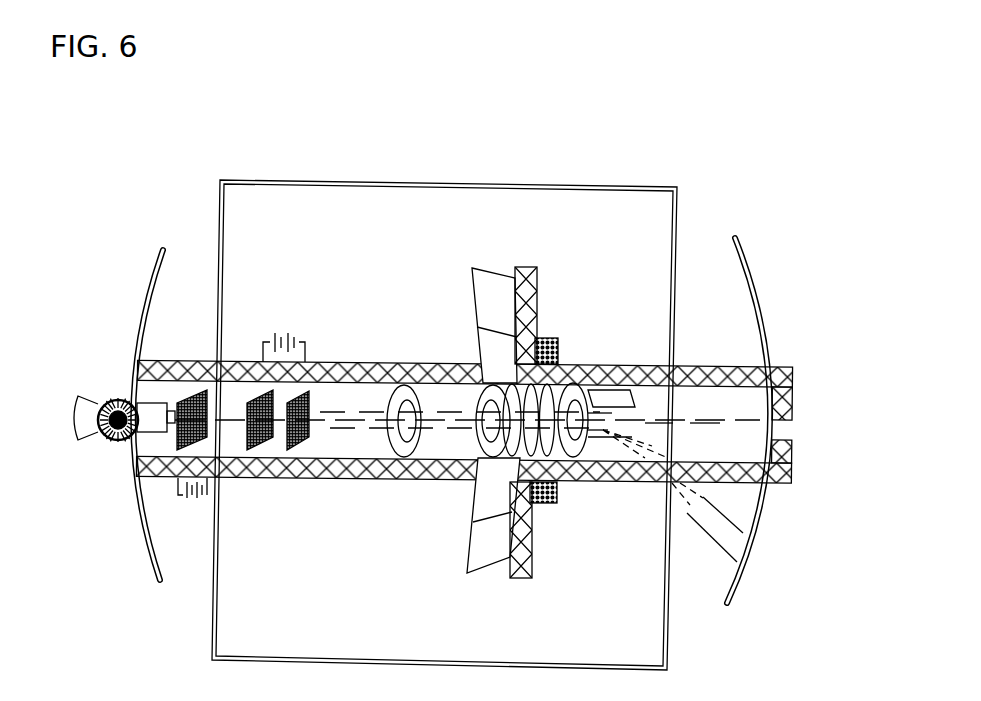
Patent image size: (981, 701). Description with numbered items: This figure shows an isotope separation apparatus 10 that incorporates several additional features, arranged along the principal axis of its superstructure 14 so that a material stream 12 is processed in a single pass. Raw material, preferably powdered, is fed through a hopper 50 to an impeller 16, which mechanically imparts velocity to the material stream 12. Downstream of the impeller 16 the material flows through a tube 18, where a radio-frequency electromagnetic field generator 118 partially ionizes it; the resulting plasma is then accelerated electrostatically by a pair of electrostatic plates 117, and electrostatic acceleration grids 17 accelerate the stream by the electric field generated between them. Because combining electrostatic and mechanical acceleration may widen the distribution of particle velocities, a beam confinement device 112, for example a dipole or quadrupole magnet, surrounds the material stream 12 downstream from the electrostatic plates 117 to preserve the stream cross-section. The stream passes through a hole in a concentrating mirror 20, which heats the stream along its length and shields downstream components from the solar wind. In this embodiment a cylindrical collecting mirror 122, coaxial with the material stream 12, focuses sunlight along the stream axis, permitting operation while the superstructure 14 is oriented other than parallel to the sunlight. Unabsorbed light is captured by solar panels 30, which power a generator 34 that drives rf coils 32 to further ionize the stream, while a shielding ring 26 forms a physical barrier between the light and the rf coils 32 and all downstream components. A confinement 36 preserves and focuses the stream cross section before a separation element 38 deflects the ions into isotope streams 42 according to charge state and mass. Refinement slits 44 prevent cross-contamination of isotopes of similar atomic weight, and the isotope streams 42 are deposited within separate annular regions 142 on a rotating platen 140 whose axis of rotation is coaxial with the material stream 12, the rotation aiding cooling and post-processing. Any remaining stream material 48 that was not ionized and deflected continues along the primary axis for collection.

The apparatus 10 is at (733, 162).
The material stream 12 is at (347, 424).
The superstructure 14 is at (387, 362).
The impeller 16 is at (107, 395).
The electrostatic acceleration grids 17 is at (292, 455).
The tube 18 is at (180, 370).
The concentrating mirror 20 is at (148, 276).
The shielding ring 26 is at (478, 462).
The solar panels 30 is at (472, 290).
The rf coils 32 is at (566, 385).
The generator 34 is at (545, 342).
The confinement 36 is at (602, 368).
The separation element 38 is at (621, 453).
The isotope streams 42 is at (668, 505).
The refinement slits 44 is at (722, 482).
The remaining stream material 48 is at (657, 423).
The hopper 50 is at (88, 440).
The beam confinement device 112 is at (407, 388).
The electrostatic plates 117 is at (209, 363).
The radio-frequency electromagnetic field generator 118 is at (137, 365).
The cylindrical collecting mirror 122 is at (353, 182).
The rotating platen 140 is at (757, 288).
The annular regions 142 is at (740, 565).